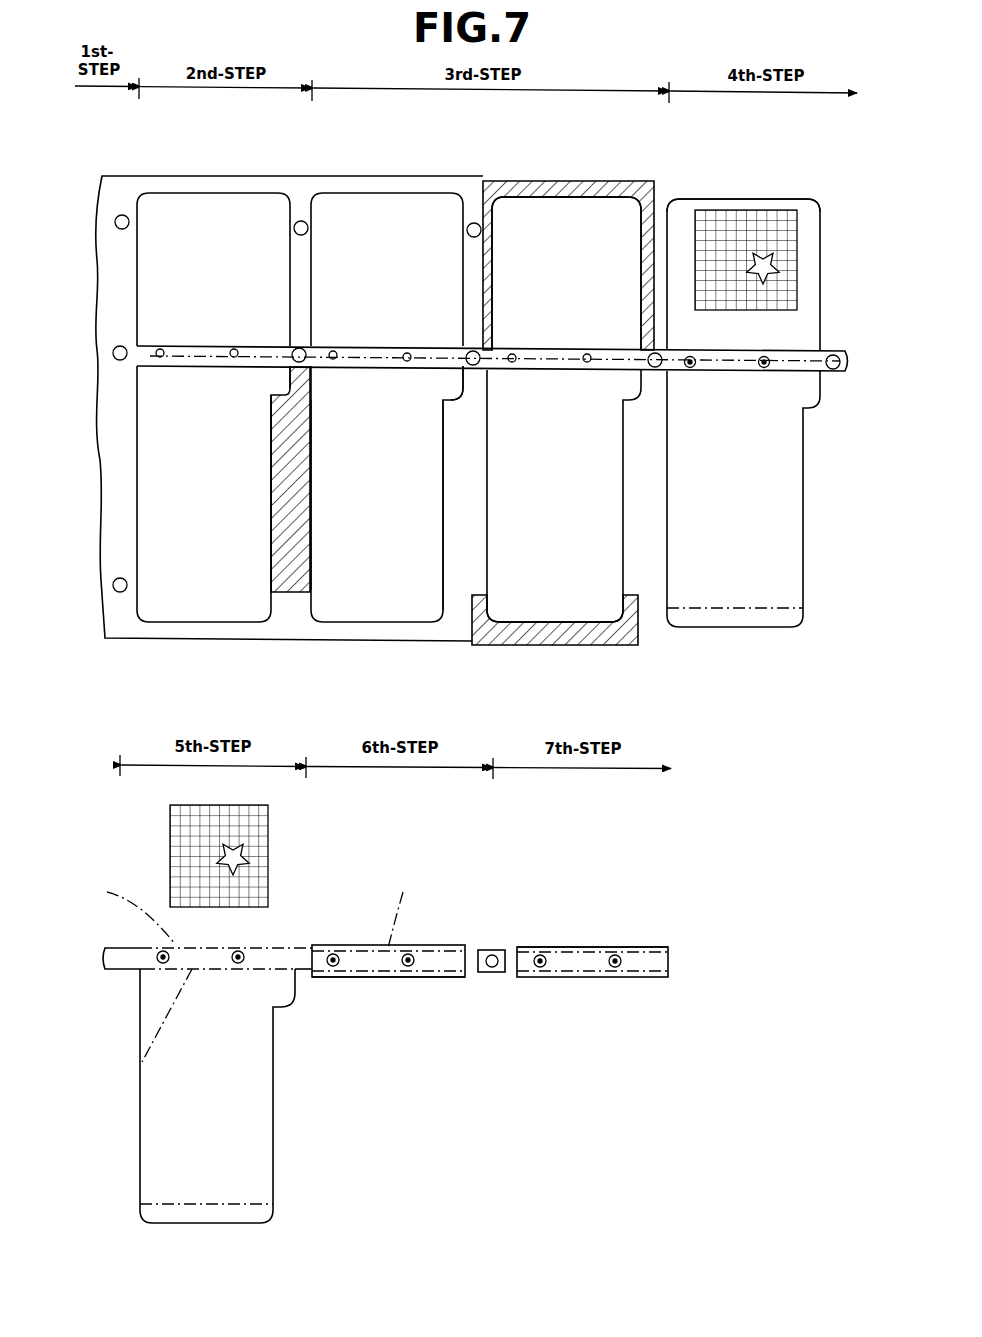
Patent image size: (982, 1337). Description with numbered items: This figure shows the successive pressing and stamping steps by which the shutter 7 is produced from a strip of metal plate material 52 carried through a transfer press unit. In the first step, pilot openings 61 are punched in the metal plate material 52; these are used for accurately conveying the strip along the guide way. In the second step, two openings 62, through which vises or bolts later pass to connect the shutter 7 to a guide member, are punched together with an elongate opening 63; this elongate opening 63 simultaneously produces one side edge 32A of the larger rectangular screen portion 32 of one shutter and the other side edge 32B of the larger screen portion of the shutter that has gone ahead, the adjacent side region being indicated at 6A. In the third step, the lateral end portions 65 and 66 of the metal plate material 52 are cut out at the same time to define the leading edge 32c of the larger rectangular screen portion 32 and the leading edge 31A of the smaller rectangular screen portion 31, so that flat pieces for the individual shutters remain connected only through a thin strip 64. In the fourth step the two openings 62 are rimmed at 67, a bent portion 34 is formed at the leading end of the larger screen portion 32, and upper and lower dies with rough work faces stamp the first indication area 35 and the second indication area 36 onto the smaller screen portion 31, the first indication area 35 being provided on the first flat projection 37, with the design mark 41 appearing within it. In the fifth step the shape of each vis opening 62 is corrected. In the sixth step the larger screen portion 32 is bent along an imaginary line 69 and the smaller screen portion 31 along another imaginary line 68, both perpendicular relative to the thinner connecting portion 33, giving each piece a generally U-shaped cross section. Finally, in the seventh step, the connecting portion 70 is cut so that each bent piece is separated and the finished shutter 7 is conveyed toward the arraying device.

The metal plate material 52 is at (88, 197).
The pilot openings 61 is at (124, 214).
The smaller rectangular screen portion 31 is at (200, 265).
The leading edge of smaller rectangular screen portion 31A is at (542, 198).
The openings 62 is at (161, 348).
The thinner connecting portion 33 is at (198, 367).
The larger rectangular screen portion 32 is at (191, 503).
The one side edge of larger rectangular screen portion 32A is at (270, 532).
The other side edge of larger rectangular screen portion 32B is at (311, 518).
The leading edge of larger rectangular screen portion 32c is at (560, 620).
The elongate opening 63 is at (292, 577).
The side portion 6A is at (441, 543).
The thin strip 64 is at (474, 372).
The lateral end portion 65 is at (573, 181).
The lateral end portion 66 is at (543, 645).
The first indication area 35 is at (686, 212).
The first flat projection 37 is at (748, 204).
The design mark 41 is at (797, 250).
The second indication area 36 is at (802, 327).
The rims 67 is at (692, 370).
The bent portion 34 is at (733, 627).
The imaginary line 68 is at (254, 906).
The imaginary line 69 is at (142, 1062).
The connecting portion 70 is at (490, 950).
The shutter 7 is at (568, 945).